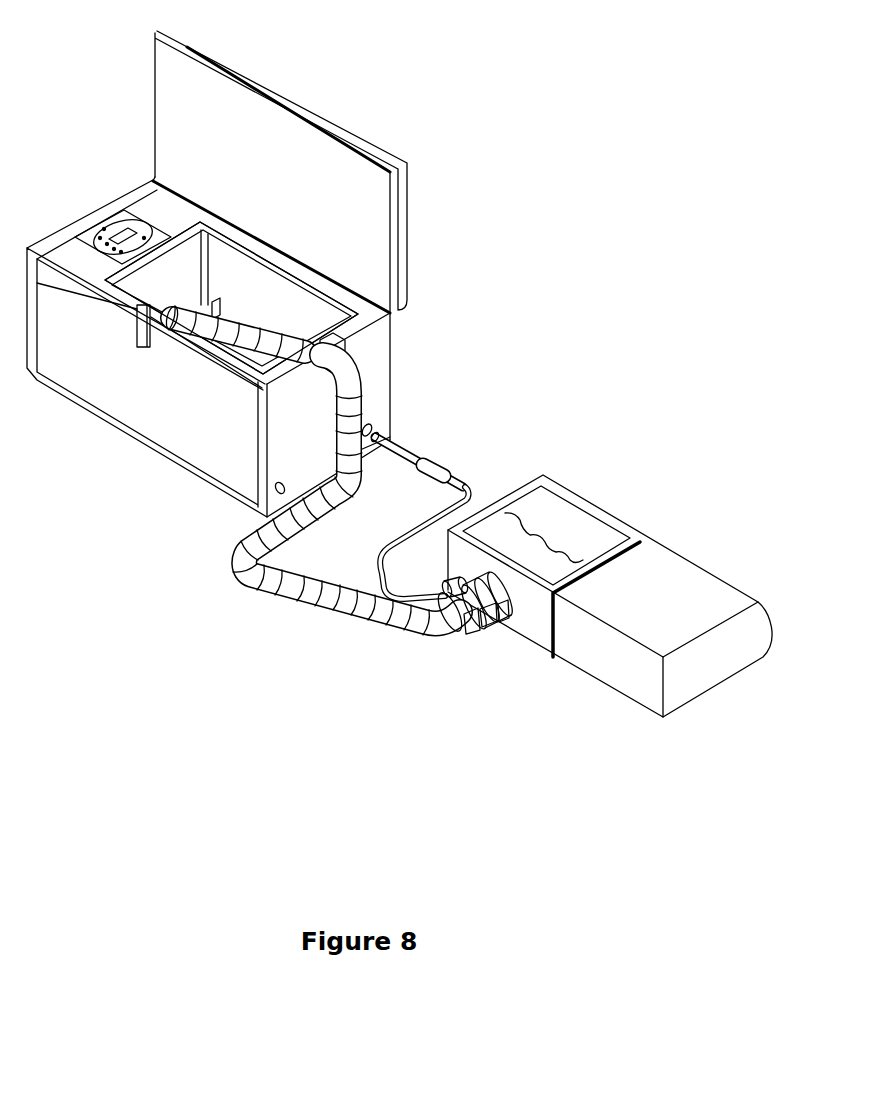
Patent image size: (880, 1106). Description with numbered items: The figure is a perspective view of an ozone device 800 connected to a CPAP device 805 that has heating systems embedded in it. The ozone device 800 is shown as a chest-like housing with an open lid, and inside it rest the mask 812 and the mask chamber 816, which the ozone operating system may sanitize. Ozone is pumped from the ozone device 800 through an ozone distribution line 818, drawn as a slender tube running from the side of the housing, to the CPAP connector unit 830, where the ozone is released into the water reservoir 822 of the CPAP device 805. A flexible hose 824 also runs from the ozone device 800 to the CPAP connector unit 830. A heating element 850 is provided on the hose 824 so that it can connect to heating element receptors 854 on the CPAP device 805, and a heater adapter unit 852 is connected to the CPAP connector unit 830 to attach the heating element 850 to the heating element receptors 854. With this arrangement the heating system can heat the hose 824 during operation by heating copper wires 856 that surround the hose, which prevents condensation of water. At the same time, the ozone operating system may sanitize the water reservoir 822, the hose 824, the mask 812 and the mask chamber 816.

The ozone device 800 is at (60, 410).
The CPAP device 805 is at (610, 601).
The mask 812 is at (187, 308).
The mask chamber 816 is at (302, 322).
The ozone distribution line 818 is at (425, 463).
The water reservoir 822 is at (570, 527).
The hose 824 is at (346, 511).
The CPAP connector unit 830 is at (498, 589).
The heating element 850 is at (470, 630).
The heater adapter unit 852 is at (487, 627).
The heating element receptors 854 is at (507, 623).
The copper wires 856 is at (333, 613).